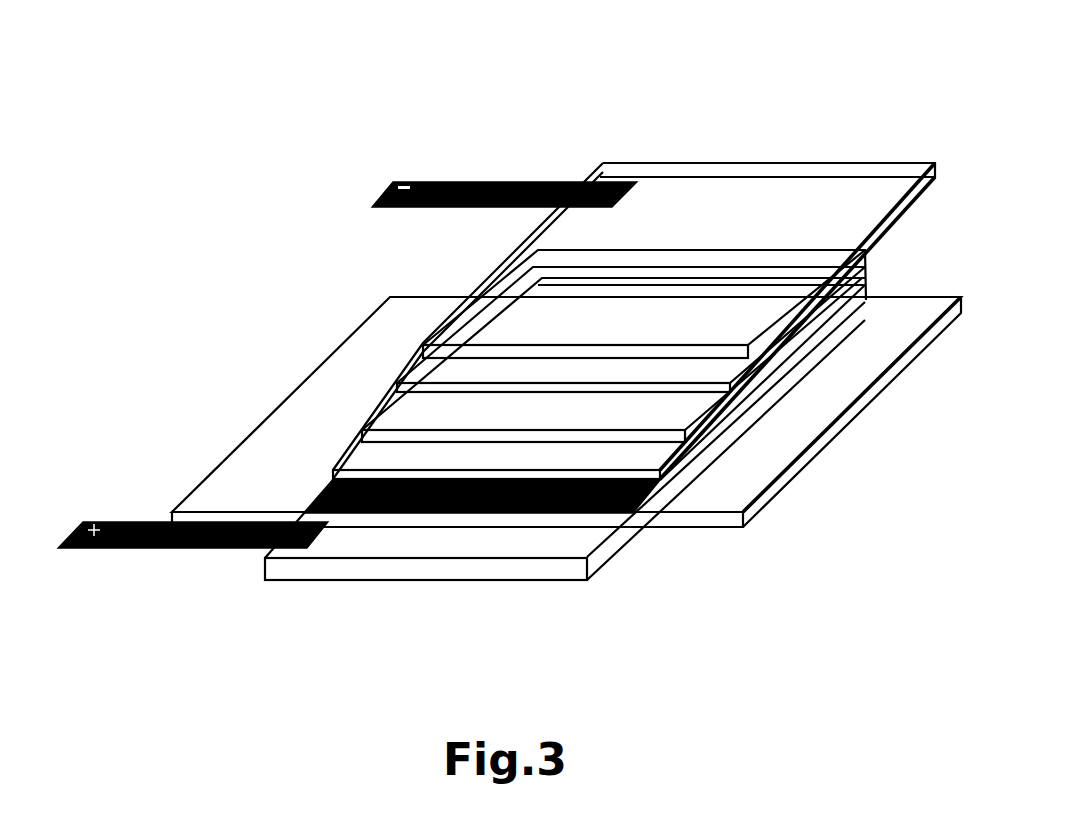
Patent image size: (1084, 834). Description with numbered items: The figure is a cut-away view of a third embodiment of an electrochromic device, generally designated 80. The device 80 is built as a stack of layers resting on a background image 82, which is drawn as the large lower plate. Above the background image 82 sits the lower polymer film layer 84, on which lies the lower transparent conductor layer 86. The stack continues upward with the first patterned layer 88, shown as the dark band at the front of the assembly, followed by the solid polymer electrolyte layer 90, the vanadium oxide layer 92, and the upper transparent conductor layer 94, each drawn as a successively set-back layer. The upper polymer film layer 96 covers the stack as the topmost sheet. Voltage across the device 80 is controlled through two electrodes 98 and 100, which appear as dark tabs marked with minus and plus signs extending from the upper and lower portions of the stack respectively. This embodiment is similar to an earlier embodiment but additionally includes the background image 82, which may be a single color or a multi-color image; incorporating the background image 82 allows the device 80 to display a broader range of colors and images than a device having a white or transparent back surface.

The electrochromic device 80 is at (563, 41).
The background image 82 is at (777, 500).
The lower polymer film layer 84 is at (545, 582).
The lower transparent conductor layer 86 is at (617, 535).
The first patterned layer 88 is at (328, 490).
The solid polymer electrolyte layer 90 is at (345, 455).
The vanadium oxide layer 92 is at (380, 408).
The upper transparent conductor layer 94 is at (415, 366).
The upper polymer film layer 96 is at (500, 268).
The electrode 98 is at (497, 183).
The electrode 100 is at (147, 518).